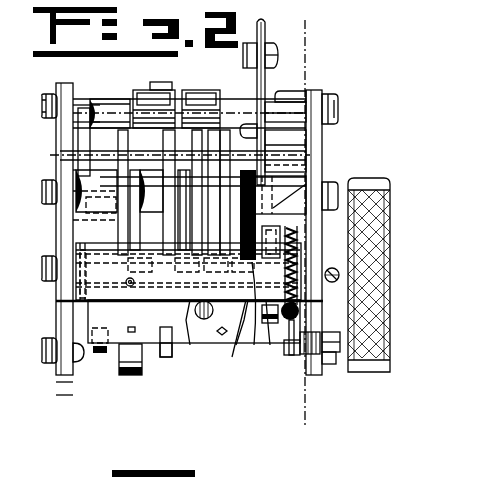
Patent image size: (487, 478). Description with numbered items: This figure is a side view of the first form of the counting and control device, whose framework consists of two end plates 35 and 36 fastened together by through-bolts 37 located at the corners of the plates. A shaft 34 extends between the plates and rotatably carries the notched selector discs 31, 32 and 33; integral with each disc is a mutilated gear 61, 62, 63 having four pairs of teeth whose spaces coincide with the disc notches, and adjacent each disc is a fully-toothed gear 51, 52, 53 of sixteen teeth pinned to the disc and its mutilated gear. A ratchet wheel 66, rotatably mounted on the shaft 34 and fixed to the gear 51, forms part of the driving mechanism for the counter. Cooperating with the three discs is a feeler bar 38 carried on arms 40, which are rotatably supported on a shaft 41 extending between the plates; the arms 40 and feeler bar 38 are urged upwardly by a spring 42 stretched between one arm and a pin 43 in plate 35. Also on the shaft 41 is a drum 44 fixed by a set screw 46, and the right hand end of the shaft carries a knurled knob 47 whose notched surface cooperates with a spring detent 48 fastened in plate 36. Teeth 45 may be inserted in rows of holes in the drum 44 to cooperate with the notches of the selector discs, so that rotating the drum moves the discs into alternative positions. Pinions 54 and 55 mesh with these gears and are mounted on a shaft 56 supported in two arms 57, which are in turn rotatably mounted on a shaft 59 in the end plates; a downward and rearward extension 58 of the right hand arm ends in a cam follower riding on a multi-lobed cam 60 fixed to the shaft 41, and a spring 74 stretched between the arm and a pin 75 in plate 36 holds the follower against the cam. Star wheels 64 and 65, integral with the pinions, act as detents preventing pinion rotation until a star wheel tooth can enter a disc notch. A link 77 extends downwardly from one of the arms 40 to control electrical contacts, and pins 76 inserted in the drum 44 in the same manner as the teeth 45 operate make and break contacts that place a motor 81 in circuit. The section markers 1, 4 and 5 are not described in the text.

The section line 1- 1 is at (310, 44).
The section line 4- 4 is at (30, 269).
The base 5 is at (56, 382).
The notched selector disc 31 is at (224, 195).
The notched selector disc 32 is at (176, 226).
The notched selector disc 33 is at (130, 224).
The shaft 34 is at (98, 222).
The end plate 35 is at (58, 86).
The end plate 36 is at (324, 96).
The through-bolts 37 is at (46, 105).
The feeler bar 38 is at (190, 364).
The arms 40 is at (342, 336).
The shaft 41 is at (198, 288).
The spring 42 is at (340, 268).
The pin 43 is at (340, 236).
The drum 44 is at (56, 302).
The teeth 45 is at (188, 392).
The set screw 46 is at (42, 339).
The knurled knob 47 is at (386, 178).
The spring detent 48 is at (336, 366).
The fully-toothed gear 51 is at (246, 268).
The fully-toothed gear 52 is at (193, 268).
The fully-toothed gear 53 is at (143, 271).
The pinion 54 is at (198, 80).
The pinion 55 is at (143, 91).
The shaft 56 is at (116, 104).
The arms 57 is at (73, 132).
The extension 58 is at (324, 178).
The shaft 59 is at (60, 155).
The multi-lobed cam 60 is at (265, 346).
The mutilated gear 61 is at (220, 268).
The mutilated gear 62 is at (155, 268).
The mutilated gear 63 is at (101, 274).
The star wheel 64 is at (243, 100).
The star wheel 65 is at (164, 74).
The ratchet wheel 66 is at (234, 336).
The spring 74 is at (324, 130).
The pin 75 is at (288, 81).
The pins 76 is at (100, 354).
The link 77 is at (280, 352).
The motor 81 is at (56, 396).